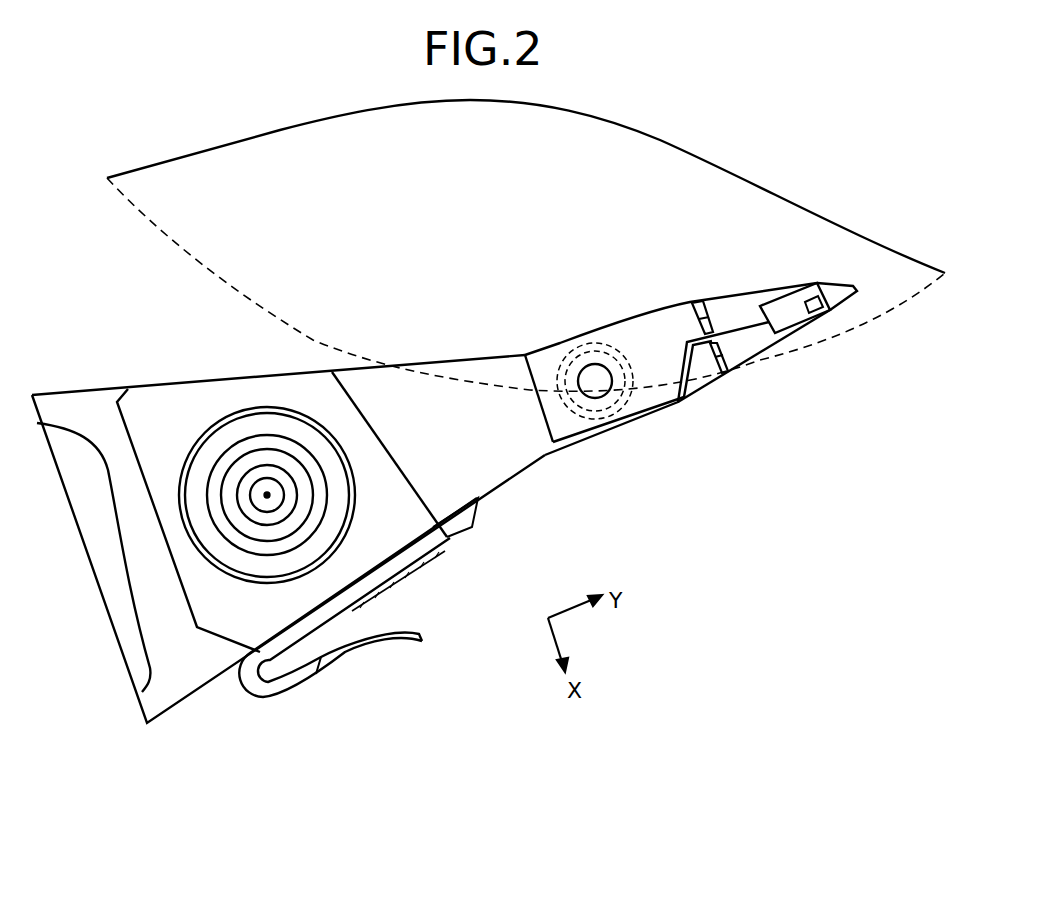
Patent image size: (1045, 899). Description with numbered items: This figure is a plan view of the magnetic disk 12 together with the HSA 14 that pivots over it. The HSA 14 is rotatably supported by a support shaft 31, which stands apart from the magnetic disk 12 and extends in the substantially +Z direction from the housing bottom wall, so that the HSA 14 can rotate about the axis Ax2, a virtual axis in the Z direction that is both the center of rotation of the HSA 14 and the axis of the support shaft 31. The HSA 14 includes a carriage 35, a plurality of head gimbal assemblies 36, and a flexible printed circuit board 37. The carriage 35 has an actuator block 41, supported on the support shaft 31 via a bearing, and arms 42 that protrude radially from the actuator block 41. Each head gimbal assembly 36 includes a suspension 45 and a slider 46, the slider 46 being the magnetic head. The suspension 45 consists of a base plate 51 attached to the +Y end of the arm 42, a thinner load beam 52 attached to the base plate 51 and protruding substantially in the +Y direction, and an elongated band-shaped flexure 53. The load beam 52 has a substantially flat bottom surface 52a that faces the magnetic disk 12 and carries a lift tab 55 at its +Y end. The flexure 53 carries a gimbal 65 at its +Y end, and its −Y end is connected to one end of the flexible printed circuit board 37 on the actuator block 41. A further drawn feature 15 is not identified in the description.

The magnetic disk 12 is at (166, 240).
The HSA 14 is at (202, 692).
The recess 15 is at (68, 515).
The support shaft 31 is at (233, 477).
The axis Ax2 is at (267, 495).
The carriage 35 is at (253, 400).
The actuator block 41 is at (267, 495).
The flexible printed circuit board 37 is at (405, 645).
The arm 42 is at (502, 460).
The base plate 51 is at (652, 395).
The load beam 52 is at (742, 352).
The bottom surface 52a is at (837, 296).
The head gimbal assembly 36 is at (757, 358).
The flexure 53 is at (788, 323).
The gimbal 65 is at (719, 358).
The suspension 45 is at (815, 327).
The slider 46 is at (822, 318).
The lift tab 55 is at (857, 288).